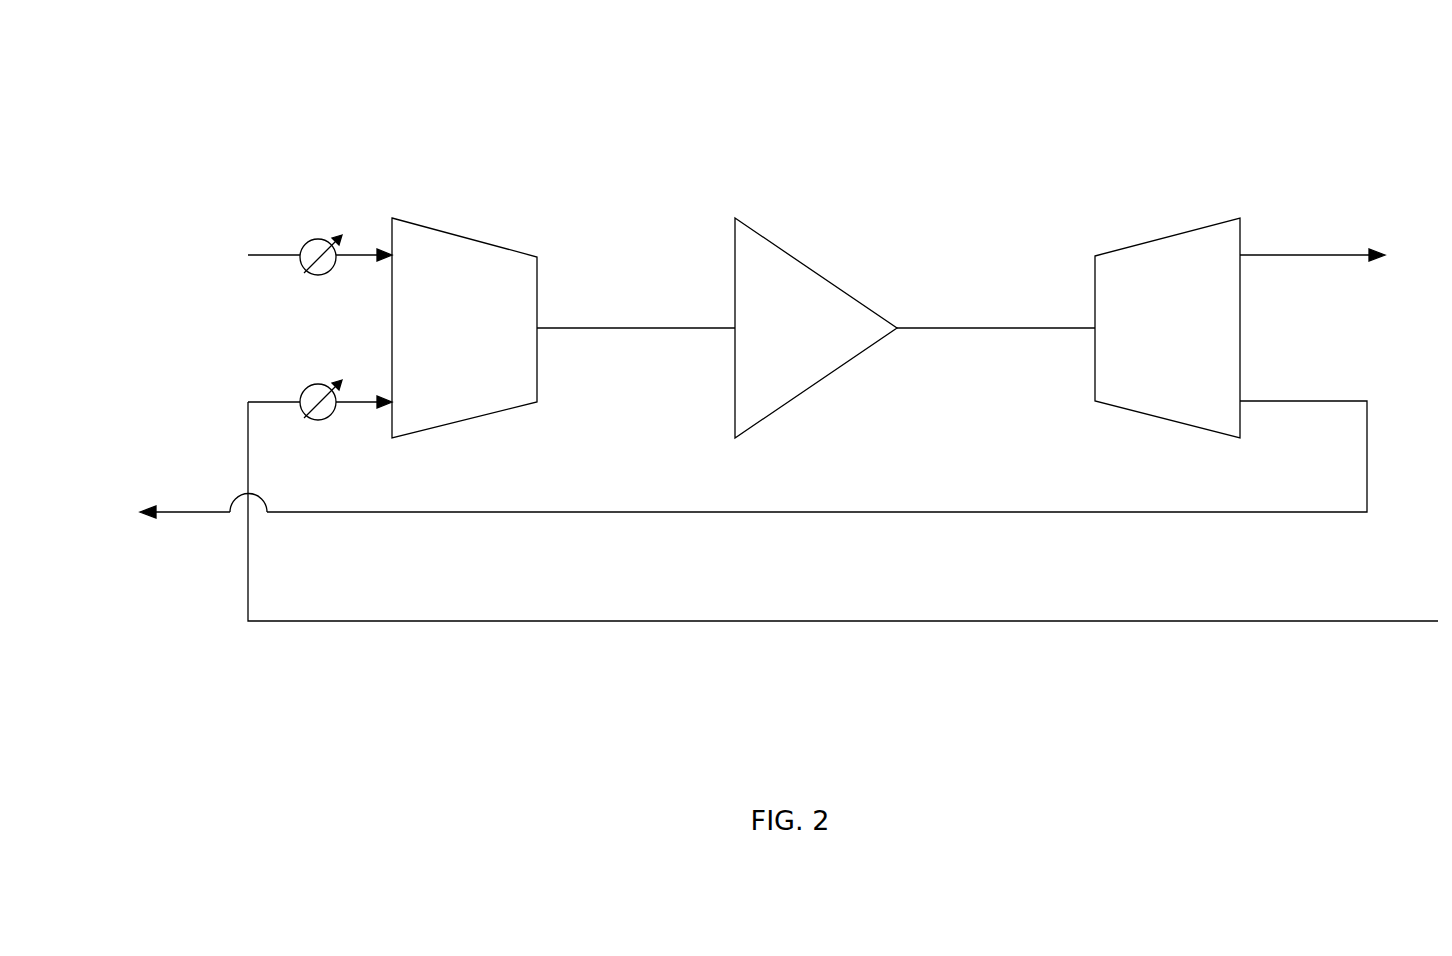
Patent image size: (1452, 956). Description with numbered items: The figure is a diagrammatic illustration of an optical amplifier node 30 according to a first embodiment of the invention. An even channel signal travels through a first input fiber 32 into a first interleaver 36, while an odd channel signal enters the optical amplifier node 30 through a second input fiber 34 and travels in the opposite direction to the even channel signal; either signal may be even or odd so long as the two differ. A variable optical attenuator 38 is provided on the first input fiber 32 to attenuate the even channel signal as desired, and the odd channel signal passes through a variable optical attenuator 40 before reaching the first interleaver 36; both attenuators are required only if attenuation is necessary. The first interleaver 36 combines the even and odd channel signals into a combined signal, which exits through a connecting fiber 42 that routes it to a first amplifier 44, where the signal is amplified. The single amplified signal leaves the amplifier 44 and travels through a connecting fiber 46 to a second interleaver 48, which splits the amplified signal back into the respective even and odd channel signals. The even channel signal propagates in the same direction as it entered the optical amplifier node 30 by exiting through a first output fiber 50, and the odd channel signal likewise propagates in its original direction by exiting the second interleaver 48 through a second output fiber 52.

The optical amplifier node 30 is at (543, 183).
The first input fiber 32 is at (265, 253).
The second input fiber 34 is at (265, 400).
The first interleaver 36 is at (474, 343).
The variable optical attenuator 38 is at (318, 239).
The variable optical attenuator 40 is at (318, 384).
The connecting fiber 42 is at (663, 327).
The first amplifier 44 is at (778, 343).
The connecting fiber 46 is at (1023, 327).
The second interleaver 48 is at (1178, 343).
The first output fiber 50 is at (1295, 253).
The second output fiber 52 is at (1303, 398).